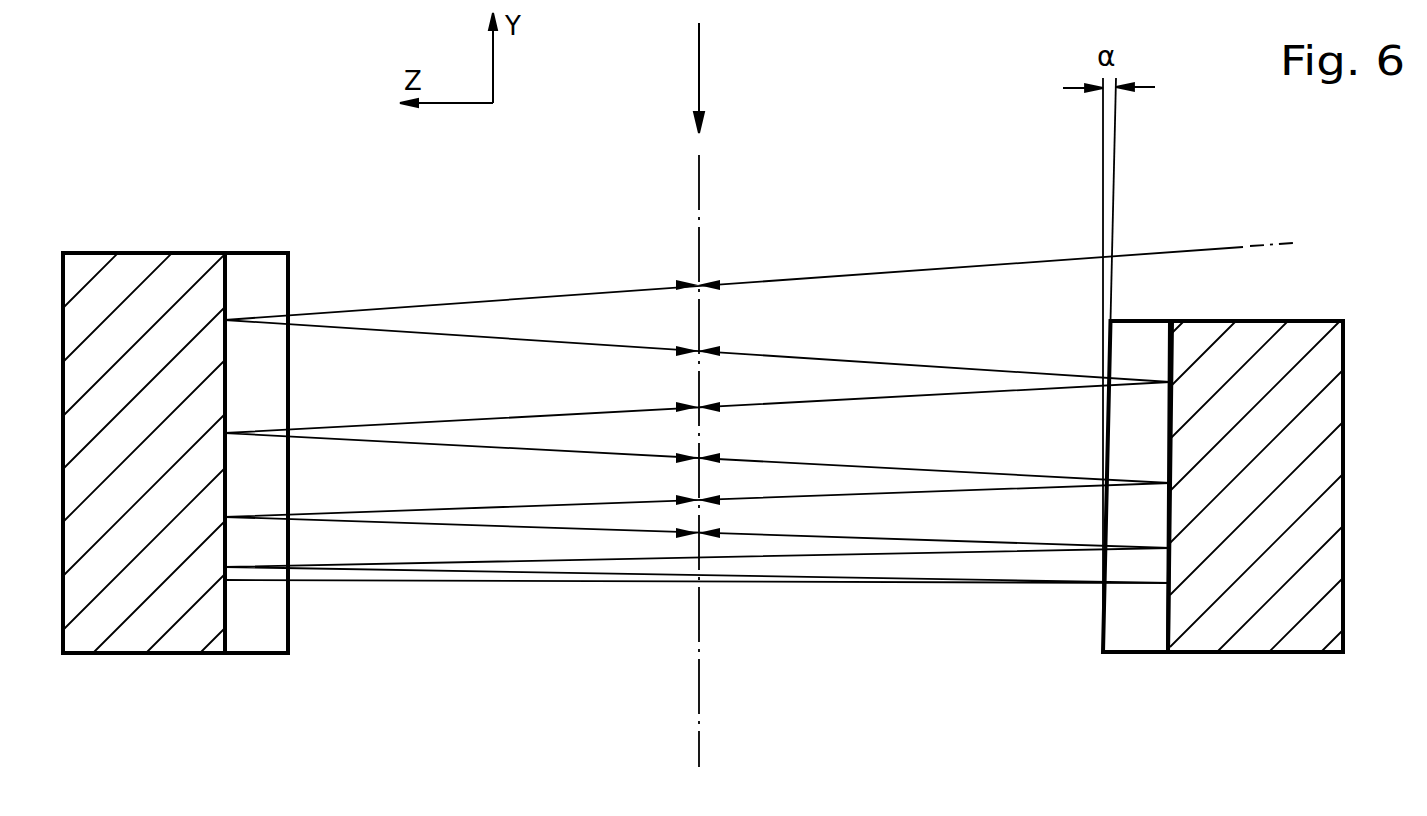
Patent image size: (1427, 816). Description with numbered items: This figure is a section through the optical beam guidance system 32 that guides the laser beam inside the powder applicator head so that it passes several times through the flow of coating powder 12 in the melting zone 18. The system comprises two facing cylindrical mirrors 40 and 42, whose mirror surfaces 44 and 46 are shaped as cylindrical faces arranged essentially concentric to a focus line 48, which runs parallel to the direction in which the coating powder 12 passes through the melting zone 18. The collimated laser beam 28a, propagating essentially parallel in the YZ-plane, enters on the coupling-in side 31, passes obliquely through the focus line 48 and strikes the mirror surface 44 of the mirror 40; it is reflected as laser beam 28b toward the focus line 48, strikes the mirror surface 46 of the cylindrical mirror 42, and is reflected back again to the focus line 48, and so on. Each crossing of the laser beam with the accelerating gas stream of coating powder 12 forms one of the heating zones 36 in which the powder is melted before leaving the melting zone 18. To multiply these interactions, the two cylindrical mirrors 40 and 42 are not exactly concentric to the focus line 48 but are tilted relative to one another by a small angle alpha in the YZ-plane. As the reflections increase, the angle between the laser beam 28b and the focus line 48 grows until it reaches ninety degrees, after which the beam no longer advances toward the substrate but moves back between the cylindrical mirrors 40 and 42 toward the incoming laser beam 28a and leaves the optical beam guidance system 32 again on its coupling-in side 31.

The coating powder 12 is at (700, 55).
The melting zone 18 is at (758, 434).
The laser beam propagating parallel in the YZ-plane 28a is at (968, 264).
The reflected laser beam 28b is at (966, 362).
The coupling-in side 31 is at (211, 452).
The optical beam guidance system 32 is at (1148, 551).
The heating zones 36 is at (696, 350).
The cylindrical mirror 40 is at (108, 612).
The cylindrical mirror 42 is at (1287, 613).
The mirror surface 44 is at (251, 632).
The mirror surface 46 is at (1145, 630).
The focus line 48 is at (699, 745).